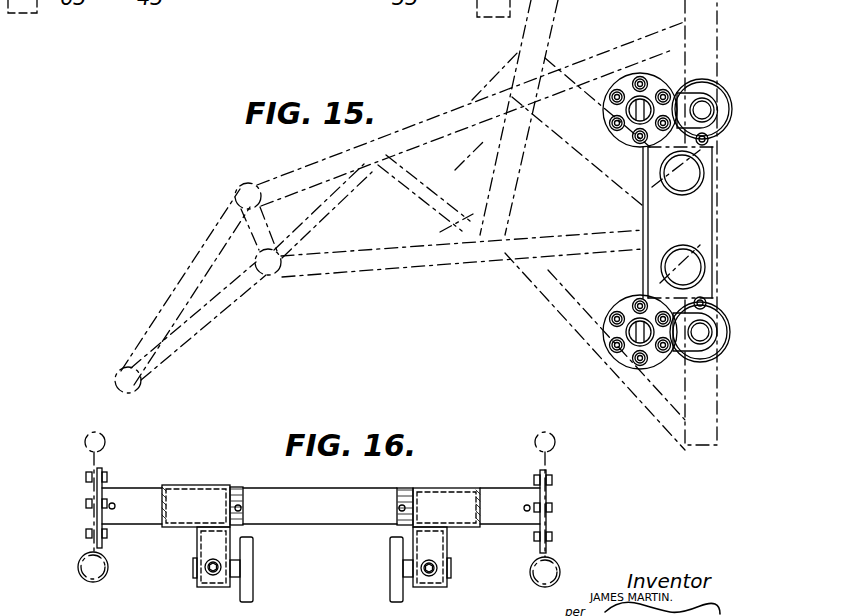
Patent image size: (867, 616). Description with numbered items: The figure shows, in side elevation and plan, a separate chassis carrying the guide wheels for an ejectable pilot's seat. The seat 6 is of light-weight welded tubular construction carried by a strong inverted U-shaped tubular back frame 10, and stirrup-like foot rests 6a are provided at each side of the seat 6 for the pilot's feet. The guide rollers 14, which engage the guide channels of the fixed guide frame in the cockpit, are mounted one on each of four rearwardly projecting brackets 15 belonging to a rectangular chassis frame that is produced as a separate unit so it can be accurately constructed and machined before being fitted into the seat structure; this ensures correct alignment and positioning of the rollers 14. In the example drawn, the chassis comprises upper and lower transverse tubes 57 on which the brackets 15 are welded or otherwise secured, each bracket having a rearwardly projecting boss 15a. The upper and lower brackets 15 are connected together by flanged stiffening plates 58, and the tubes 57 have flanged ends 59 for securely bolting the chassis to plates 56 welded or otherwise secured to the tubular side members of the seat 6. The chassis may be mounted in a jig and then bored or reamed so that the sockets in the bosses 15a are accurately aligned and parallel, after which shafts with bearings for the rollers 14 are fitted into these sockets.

In FIG. 15, the pilot's seat 6 is at (537, 32).
In FIG. 15, the stirrup-like foot rests 6a is at (140, 386).
In FIG. 15, the tubular back frame 10 is at (687, 447).
In FIG. 16, the tubular back frame 10 is at (93, 583).
In FIG. 15, the guide rollers 14 is at (720, 132).
In FIG. 16, the guide rollers 14 is at (248, 594).
In FIG. 15, the brackets 15 is at (692, 97).
In FIG. 16, the brackets 15 is at (178, 515).
In FIG. 16, the rearwardly projecting bosses 15a is at (462, 600).
In FIG. 15, the plates 56 is at (587, 143).
In FIG. 16, the plates 56 is at (88, 462).
In FIG. 15, the transverse tubes 57 is at (630, 105).
In FIG. 16, the transverse tubes 57 is at (349, 536).
In FIG. 15, the flanged stiffening plates 58 is at (643, 215).
In FIG. 15, the flanged ends 59 is at (626, 75).
In FIG. 16, the flanged ends 59 is at (102, 470).